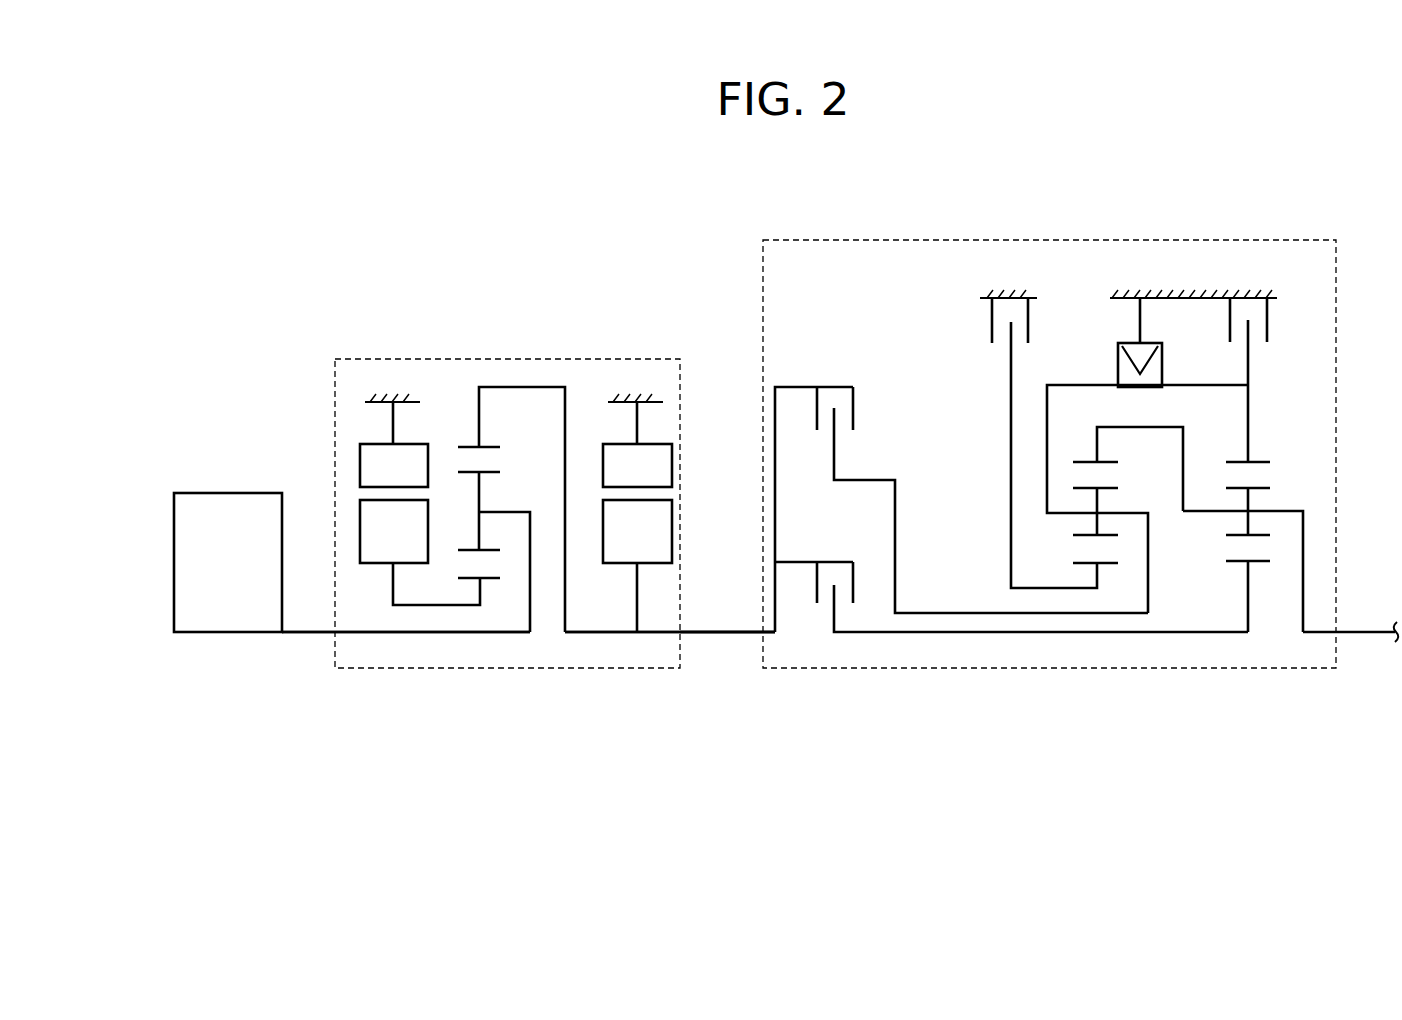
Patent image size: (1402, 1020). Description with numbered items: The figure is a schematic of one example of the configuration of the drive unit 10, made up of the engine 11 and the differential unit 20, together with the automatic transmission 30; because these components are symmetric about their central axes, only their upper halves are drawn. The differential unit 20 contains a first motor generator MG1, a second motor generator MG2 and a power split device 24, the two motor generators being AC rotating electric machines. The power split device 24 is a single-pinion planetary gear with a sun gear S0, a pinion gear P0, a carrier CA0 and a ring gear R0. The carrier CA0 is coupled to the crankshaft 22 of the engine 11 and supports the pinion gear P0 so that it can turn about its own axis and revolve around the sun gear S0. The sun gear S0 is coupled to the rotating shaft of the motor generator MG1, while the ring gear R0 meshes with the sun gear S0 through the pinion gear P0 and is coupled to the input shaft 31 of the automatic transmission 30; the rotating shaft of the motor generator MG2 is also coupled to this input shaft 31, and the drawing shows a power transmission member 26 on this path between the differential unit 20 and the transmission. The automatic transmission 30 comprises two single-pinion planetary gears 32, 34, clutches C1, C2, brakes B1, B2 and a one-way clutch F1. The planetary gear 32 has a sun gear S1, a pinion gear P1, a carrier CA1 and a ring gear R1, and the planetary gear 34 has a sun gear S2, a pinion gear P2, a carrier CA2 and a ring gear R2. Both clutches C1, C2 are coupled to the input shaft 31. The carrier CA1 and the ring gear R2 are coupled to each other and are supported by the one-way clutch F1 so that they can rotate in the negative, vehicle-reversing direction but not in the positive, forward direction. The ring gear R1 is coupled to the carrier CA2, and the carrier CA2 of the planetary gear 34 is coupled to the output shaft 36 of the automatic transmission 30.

The drive unit 10 is at (160, 320).
The engine 11 is at (240, 492).
The differential unit 20 is at (613, 358).
The crankshaft 22 is at (307, 633).
The power split device 24 is at (503, 565).
The power transmission member 26 is at (665, 633).
The automatic transmission 30 is at (1278, 240).
The input shaft 31 is at (723, 633).
The planetary gear 32 is at (1132, 564).
The planetary gear 34 is at (1249, 587).
The output shaft 36 is at (1378, 633).
The motor generator MG1 is at (373, 588).
The motor generator MG2 is at (617, 590).
The ring gear R0 is at (492, 447).
The carrier CA0 is at (493, 513).
The pinion gear P0 is at (465, 548).
The sun gear S0 is at (490, 580).
The clutch C1 is at (1011, 580).
The clutch C2 is at (961, 494).
The brake B1 is at (1038, 422).
The brake B2 is at (1248, 358).
The one-way clutch F1 is at (1193, 320).
The ring gear R1 is at (1107, 462).
The carrier CA1 is at (1108, 510).
The pinion gear P1 is at (1080, 533).
The sun gear S1 is at (1107, 565).
The ring gear R2 is at (1260, 462).
The carrier CA2 is at (1262, 510).
The pinion gear P2 is at (1240, 533).
The sun gear S2 is at (1262, 563).